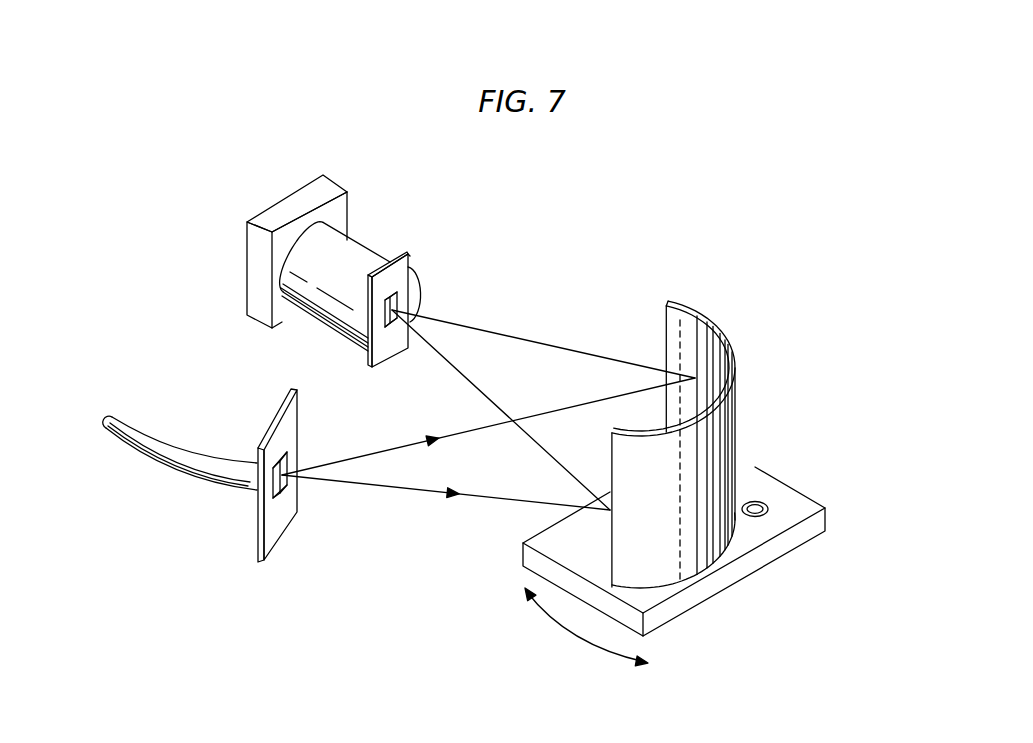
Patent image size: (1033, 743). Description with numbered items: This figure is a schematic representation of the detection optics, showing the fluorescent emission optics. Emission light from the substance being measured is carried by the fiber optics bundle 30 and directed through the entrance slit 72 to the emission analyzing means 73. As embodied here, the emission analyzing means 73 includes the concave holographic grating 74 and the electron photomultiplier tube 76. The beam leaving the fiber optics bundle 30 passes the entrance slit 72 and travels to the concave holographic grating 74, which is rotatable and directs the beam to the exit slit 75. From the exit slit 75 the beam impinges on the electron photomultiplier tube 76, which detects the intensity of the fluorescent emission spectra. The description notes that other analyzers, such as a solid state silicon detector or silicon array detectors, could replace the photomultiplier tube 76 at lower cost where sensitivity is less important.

The electron photomultiplier tube 76 is at (240, 194).
The exit slit 75 is at (416, 282).
The emission analyzing means 73 is at (520, 310).
The concave holographic grating 74 is at (748, 350).
The fiber optics bundle 30 is at (177, 435).
The entrance slit 72 is at (248, 521).